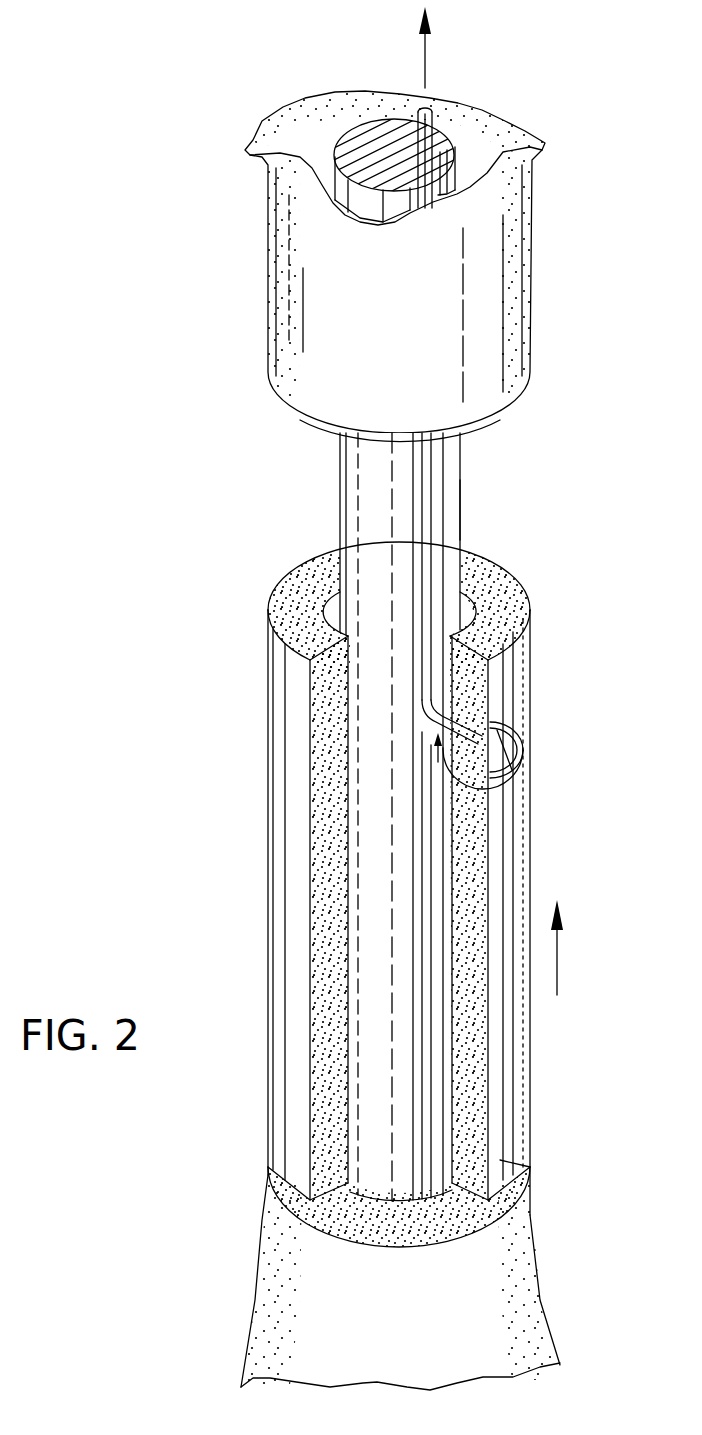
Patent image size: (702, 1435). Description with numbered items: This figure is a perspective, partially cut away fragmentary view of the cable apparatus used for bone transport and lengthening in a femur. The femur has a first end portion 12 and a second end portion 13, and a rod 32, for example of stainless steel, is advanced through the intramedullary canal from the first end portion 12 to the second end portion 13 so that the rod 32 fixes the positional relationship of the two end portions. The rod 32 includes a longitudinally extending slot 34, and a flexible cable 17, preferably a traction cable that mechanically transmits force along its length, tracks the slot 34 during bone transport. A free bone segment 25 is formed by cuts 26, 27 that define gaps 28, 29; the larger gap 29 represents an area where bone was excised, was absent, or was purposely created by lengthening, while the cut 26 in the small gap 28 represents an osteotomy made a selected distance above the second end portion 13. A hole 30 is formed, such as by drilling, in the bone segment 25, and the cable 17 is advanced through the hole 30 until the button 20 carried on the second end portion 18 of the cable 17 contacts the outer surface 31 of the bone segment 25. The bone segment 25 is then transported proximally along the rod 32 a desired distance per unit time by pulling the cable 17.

The first end portion 12 is at (405, 320).
The second end portion 13 is at (401, 1347).
The flexible cable 17 is at (435, 125).
The second end portion 18 is at (480, 712).
The button 20 is at (518, 750).
The bone segment 25 is at (293, 918).
The cut 26 is at (530, 1198).
The cut 27 is at (515, 397).
The gap 28 is at (530, 1172).
The gap 29 is at (478, 502).
The hole 30 is at (500, 800).
The outer surface 31 is at (268, 872).
The rod 32 is at (372, 469).
The longitudinally extending slot 34 is at (412, 172).